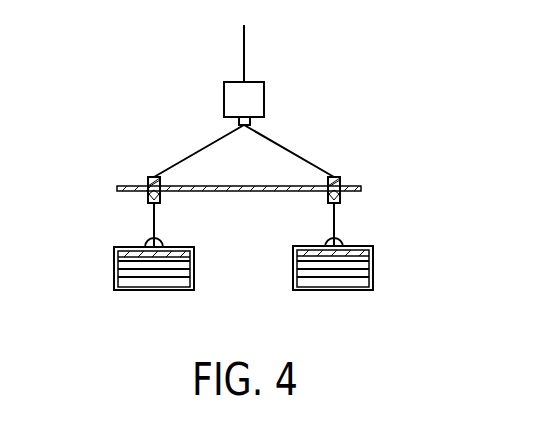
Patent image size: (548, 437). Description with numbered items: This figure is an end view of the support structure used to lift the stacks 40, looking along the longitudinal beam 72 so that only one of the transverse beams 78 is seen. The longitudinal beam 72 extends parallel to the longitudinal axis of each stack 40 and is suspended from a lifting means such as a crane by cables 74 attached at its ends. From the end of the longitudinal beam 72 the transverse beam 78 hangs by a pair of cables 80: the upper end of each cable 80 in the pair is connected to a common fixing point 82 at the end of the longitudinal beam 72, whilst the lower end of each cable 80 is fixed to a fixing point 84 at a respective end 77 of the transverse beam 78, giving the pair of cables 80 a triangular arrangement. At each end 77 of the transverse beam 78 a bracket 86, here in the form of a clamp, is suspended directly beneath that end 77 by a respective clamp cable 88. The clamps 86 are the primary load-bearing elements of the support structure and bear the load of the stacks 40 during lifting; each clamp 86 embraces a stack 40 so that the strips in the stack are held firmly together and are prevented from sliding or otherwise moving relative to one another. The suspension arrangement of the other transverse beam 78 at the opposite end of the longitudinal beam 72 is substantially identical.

The cables 74 is at (245, 50).
The longitudinal beam 72 is at (264, 93).
The common fixing point 82 is at (251, 121).
The cables 80 is at (218, 138).
The end of the transverse beam 77 is at (143, 160).
The transverse beam 78 is at (240, 192).
The fixing point 84 is at (148, 180).
The clamp cable 88 is at (153, 222).
The bracket 86 is at (116, 249).
The stack 40 is at (150, 275).